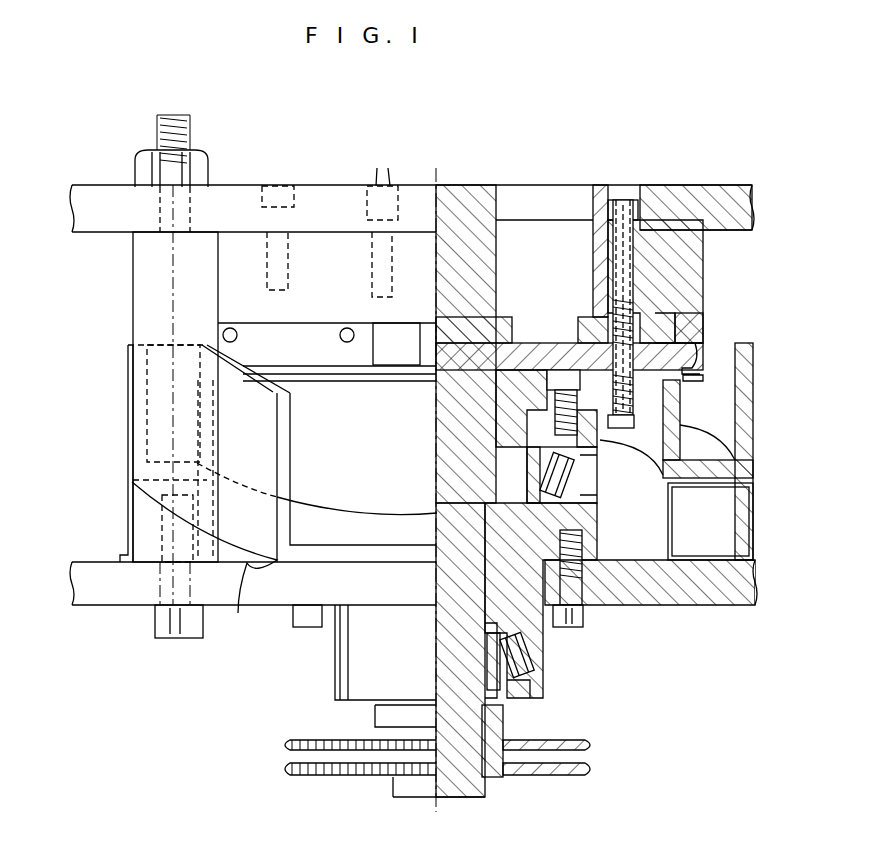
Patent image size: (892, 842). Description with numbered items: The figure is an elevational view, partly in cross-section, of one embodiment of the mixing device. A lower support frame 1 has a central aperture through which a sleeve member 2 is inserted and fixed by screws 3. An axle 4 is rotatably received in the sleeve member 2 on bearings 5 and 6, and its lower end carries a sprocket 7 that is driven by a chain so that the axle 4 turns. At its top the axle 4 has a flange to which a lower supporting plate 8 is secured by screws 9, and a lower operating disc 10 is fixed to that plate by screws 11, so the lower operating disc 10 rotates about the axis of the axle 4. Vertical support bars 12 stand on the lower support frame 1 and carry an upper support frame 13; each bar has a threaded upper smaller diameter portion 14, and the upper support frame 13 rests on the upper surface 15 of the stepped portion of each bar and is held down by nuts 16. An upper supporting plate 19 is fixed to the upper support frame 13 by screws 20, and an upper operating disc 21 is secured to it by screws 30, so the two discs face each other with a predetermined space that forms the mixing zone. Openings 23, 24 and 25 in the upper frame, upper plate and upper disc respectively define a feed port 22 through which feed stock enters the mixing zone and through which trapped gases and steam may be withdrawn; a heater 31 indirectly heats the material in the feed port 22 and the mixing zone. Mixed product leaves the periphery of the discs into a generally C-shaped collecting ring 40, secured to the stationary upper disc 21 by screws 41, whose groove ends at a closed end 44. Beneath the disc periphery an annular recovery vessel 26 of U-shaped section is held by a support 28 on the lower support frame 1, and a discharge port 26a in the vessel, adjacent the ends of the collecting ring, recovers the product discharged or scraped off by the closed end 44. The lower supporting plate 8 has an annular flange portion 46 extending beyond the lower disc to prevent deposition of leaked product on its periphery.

The lower support frame 1 is at (688, 605).
The sleeve member 2 is at (597, 545).
The screws 3 is at (572, 627).
The axle 4 is at (470, 790).
The bearing 5 is at (540, 473).
The bearing 6 is at (505, 668).
The sprocket 7 is at (545, 778).
The lower supporting plate 8 is at (462, 395).
The screws 9 is at (555, 420).
The lower operating disc 10 is at (521, 356).
The screws 11 is at (620, 428).
The support bars 12 is at (132, 318).
The upper support frame 13 is at (97, 185).
The upper smaller diameter portion 14 is at (157, 134).
The upper surface of stepped portion 15 is at (130, 235).
The nuts 16 is at (208, 166).
The upper supporting plate 19 is at (705, 278).
The screws 20 is at (267, 268).
The upper operating disc 21 is at (672, 318).
The feed port 22 is at (530, 287).
The opening 23 is at (592, 207).
The opening 24 is at (592, 262).
The opening 25 is at (570, 332).
The annular recovery vessel 26 is at (128, 425).
The discharge port 26a is at (207, 569).
The support 28 is at (128, 518).
The screws 30 is at (627, 270).
The heater 31 is at (393, 258).
The collecting ring 40 is at (705, 335).
The screws 41 is at (236, 333).
The closed end 44 is at (398, 350).
The annular flange portion 46 is at (690, 372).